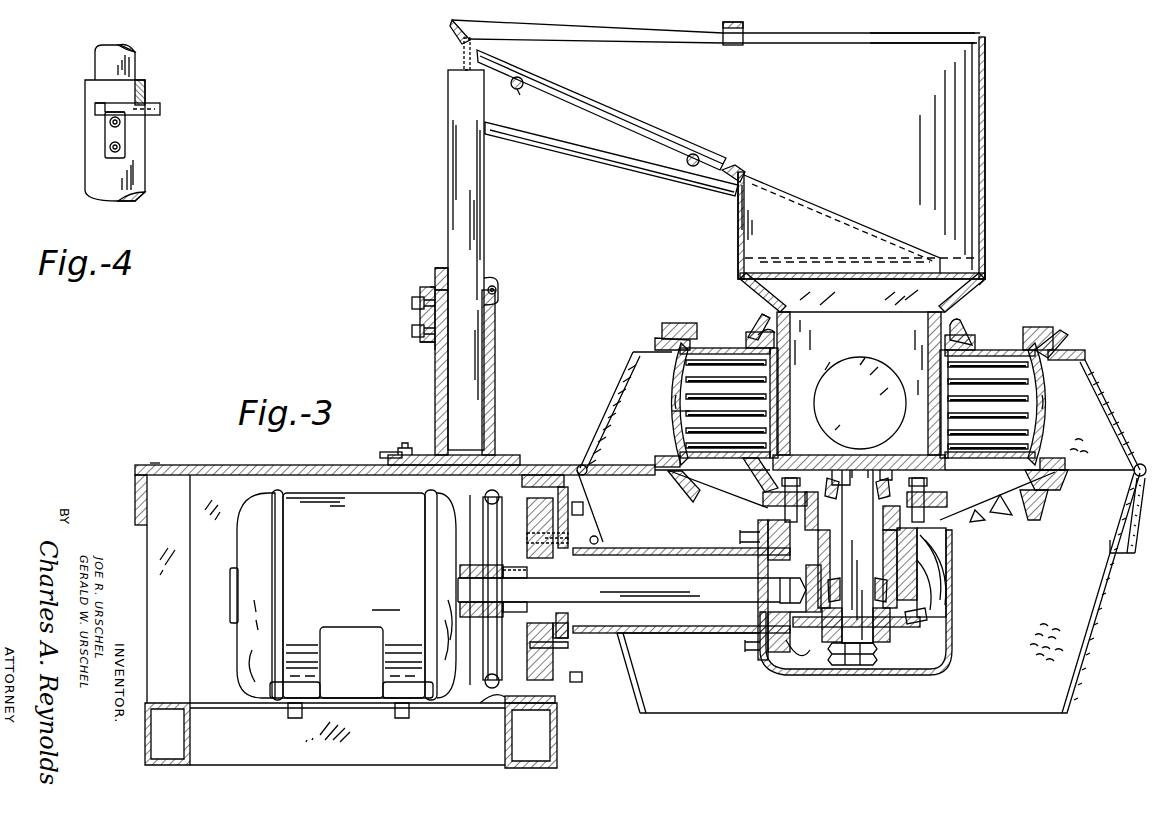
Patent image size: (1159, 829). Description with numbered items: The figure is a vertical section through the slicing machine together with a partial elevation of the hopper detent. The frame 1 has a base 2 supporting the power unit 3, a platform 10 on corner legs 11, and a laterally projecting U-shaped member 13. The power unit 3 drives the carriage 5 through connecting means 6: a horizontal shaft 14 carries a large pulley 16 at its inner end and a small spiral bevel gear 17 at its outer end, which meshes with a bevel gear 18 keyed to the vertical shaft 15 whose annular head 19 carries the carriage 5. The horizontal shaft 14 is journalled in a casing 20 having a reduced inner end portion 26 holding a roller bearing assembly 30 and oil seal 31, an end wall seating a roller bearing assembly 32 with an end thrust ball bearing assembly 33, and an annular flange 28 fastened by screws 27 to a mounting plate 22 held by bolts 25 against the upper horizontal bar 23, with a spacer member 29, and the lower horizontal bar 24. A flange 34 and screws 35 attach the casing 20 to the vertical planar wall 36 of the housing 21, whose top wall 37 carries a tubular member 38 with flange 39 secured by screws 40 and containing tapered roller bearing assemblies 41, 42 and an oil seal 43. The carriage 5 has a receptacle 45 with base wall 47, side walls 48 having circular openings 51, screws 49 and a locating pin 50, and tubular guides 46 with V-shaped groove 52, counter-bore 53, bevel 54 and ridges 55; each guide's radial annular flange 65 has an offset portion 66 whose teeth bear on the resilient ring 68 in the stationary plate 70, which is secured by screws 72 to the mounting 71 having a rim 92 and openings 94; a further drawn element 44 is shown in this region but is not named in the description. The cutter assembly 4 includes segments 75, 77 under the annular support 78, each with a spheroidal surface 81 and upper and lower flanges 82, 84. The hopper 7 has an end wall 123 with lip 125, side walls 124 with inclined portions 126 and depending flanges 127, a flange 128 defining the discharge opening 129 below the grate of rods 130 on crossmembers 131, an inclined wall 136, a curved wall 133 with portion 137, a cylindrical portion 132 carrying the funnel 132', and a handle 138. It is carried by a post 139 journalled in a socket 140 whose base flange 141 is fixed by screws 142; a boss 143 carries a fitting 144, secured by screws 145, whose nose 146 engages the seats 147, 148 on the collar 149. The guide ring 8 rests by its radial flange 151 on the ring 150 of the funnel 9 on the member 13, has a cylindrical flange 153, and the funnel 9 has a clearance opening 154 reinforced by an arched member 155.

In FIG. 3, the frame 1 is at (146, 463).
In FIG. 3, the base 2 is at (222, 703).
In FIG. 3, the power unit 3 is at (330, 604).
In FIG. 3, the cutter assembly 4 is at (646, 333).
In FIG. 3, the carriage 5 is at (991, 291).
In FIG. 3, the connecting means 6 is at (695, 640).
In FIG. 3, the hopper 7 is at (990, 84).
In FIG. 3, the guide ring 8 is at (1105, 389).
In FIG. 3, the funnel 9 is at (1095, 615).
In FIG. 3, the platform 10 is at (208, 464).
In FIG. 3, the corner legs 11 is at (183, 552).
In FIG. 3, the U-shaped member 13 is at (1135, 553).
In FIG. 3, the horizontal shaft 14 is at (692, 600).
In FIG. 3, the vertical shaft 15 is at (878, 630).
In FIG. 3, the pulley 16 is at (485, 535).
In FIG. 3, the spiral bevel gear 17 is at (805, 615).
In FIG. 3, the bevel gear 18 is at (880, 648).
In FIG. 3, the annular head 19 is at (838, 455).
In FIG. 3, the casing 20 is at (665, 634).
In FIG. 3, the housing 21 is at (952, 670).
In FIG. 3, the mounting plate 22 is at (480, 525).
In FIG. 3, the upper horizontal bar 23 is at (520, 480).
In FIG. 3, the lower horizontal bar 24 is at (506, 705).
In FIG. 3, the bolts 25 is at (584, 508).
In FIG. 3, the reduced inner end portion 26 is at (540, 608).
In FIG. 3, the screws 27 is at (528, 540).
In FIG. 3, the annular flange 28 is at (568, 638).
In FIG. 3, the spacer member 29 is at (588, 489).
In FIG. 3, the roller bearing assembly 30 is at (540, 578).
In FIG. 3, the oil seal 31 is at (508, 586).
In FIG. 3, the roller bearing assembly 32 is at (752, 600).
In FIG. 3, the end thrust ball bearing assembly 33 is at (815, 645).
In FIG. 3, the annular flange 34 is at (762, 662).
In FIG. 3, the screws 35 is at (740, 541).
In FIG. 3, the vertical planar wall 36 is at (790, 650).
In FIG. 3, the top wall 37 is at (938, 562).
In FIG. 3, the tubular member 38 is at (945, 600).
In FIG. 3, the annular flange 39 is at (940, 585).
In FIG. 3, the screws 40 is at (935, 540).
In FIG. 3, the tapered roller bearing assembly 41 is at (940, 616).
In FIG. 3, the tapered roller bearing assembly 42 is at (877, 520).
In FIG. 3, the oil seal 43 is at (878, 505).
In FIG. 3, the impeller base plate 44 is at (828, 458).
In FIG. 3, the receptacle 45 is at (823, 301).
In FIG. 3, the tubular guides 46 is at (713, 346).
In FIG. 3, the base wall 47 is at (878, 452).
In FIG. 3, the side walls 48 is at (903, 304).
In FIG. 3, the screws 49 is at (873, 458).
In FIG. 3, the pin 50 is at (859, 455).
In FIG. 3, the circular opening 51 is at (825, 365).
In FIG. 3, the V-shaped groove 52 is at (755, 330).
In FIG. 3, the counter-bore 53 is at (763, 398).
In FIG. 3, the bevel 54 is at (672, 411).
In FIG. 3, the ridges 55 is at (716, 412).
In FIG. 3, the radial annular flange 65 is at (725, 472).
In FIG. 3, the offset portion 66 is at (762, 318).
In FIG. 3, the resilient ring 68 is at (975, 515).
In FIG. 3, the stationary plate 70 is at (756, 482).
In FIG. 3, the mounting 71 is at (1038, 502).
In FIG. 3, the screws 72 is at (763, 510).
In FIG. 3, the curved elongate segment 75 is at (672, 372).
In FIG. 3, the curved elongate segment 77 is at (1046, 412).
In FIG. 3, the annular support 78 is at (1036, 328).
In FIG. 3, the spheroidal surface 81 is at (673, 394).
In FIG. 3, the upper horizontal outer flange 82 is at (655, 343).
In FIG. 3, the lower horizontal outer flange 84 is at (663, 460).
In FIG. 3, the rim 92 is at (1050, 484).
In FIG. 3, the openings 94 is at (710, 500).
In FIG. 3, the end wall 123 is at (462, 56).
In FIG. 3, the side walls 124 is at (603, 47).
In FIG. 3, the lip 125 is at (455, 28).
In FIG. 3, the inclined portions 126 is at (627, 40).
In FIG. 3, the depending flanges 127 is at (572, 141).
In FIG. 3, the depending flange 128 is at (718, 181).
In FIG. 3, the discharge opening 129 is at (622, 151).
In FIG. 3, the cylindrical rods 130 is at (645, 122).
In FIG. 3, the crossmembers 131 is at (520, 88).
In FIG. 3, the cylindrical portion 132 is at (725, 212).
In FIG. 3, the funnel 132' is at (845, 257).
In FIG. 3, the curved wall 133 is at (857, 48).
In FIG. 3, the inclined wall 136 is at (815, 208).
In FIG. 3, the portion 137 is at (940, 156).
In FIG. 3, the handle 138 is at (740, 22).
In FIG. 4, the post 139 is at (136, 55).
In FIG. 3, the post 139 is at (447, 97).
In FIG. 4, the cylindrical socket 140 is at (130, 177).
In FIG. 3, the cylindrical socket 140 is at (434, 380).
In FIG. 3, the base flange 141 is at (388, 455).
In FIG. 3, the screws 142 is at (410, 448).
In FIG. 3, the boss 143 is at (420, 318).
In FIG. 4, the fitting 144 is at (110, 137).
In FIG. 3, the fitting 144 is at (432, 345).
In FIG. 4, the screws 145 is at (120, 147).
In FIG. 3, the screws 145 is at (412, 298).
In FIG. 4, the nose 146 is at (100, 110).
In FIG. 3, the nose 146 is at (432, 288).
In FIG. 4, the concave seat 147 is at (135, 135).
In FIG. 4, the concave seat 148 is at (150, 115).
In FIG. 4, the collar 149 is at (146, 90).
In FIG. 3, the collar 149 is at (436, 278).
In FIG. 3, the ring 150 is at (1133, 473).
In FIG. 3, the radial flange 151 is at (583, 464).
In FIG. 3, the cylindrical flange 153 is at (1087, 352).
In FIG. 3, the clearance opening 154 is at (646, 700).
In FIG. 3, the arched member 155 is at (628, 706).